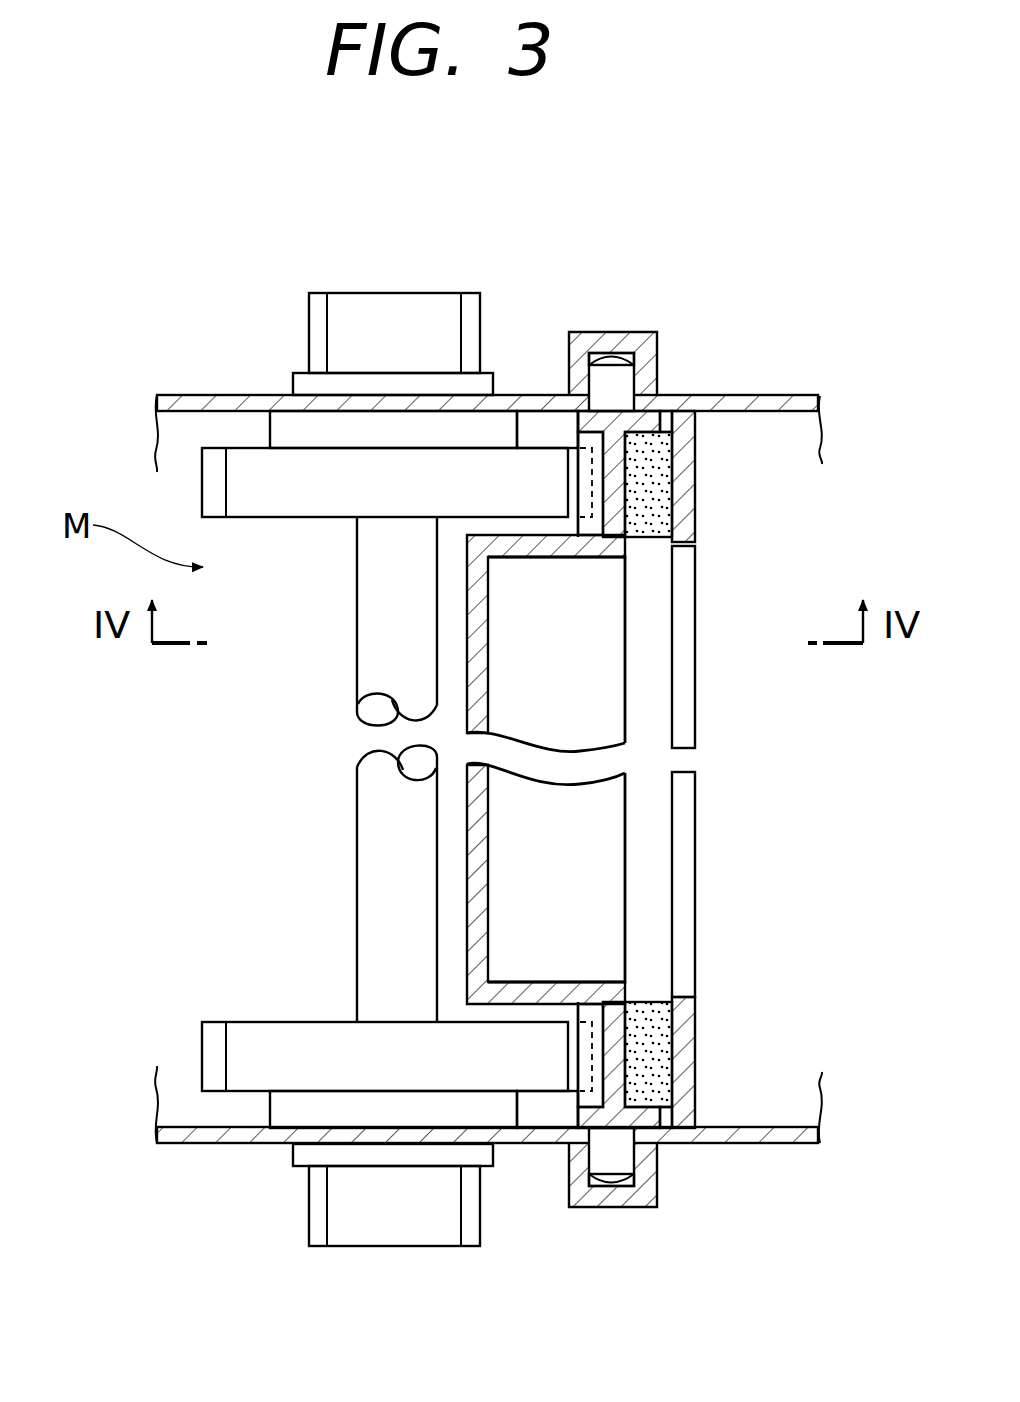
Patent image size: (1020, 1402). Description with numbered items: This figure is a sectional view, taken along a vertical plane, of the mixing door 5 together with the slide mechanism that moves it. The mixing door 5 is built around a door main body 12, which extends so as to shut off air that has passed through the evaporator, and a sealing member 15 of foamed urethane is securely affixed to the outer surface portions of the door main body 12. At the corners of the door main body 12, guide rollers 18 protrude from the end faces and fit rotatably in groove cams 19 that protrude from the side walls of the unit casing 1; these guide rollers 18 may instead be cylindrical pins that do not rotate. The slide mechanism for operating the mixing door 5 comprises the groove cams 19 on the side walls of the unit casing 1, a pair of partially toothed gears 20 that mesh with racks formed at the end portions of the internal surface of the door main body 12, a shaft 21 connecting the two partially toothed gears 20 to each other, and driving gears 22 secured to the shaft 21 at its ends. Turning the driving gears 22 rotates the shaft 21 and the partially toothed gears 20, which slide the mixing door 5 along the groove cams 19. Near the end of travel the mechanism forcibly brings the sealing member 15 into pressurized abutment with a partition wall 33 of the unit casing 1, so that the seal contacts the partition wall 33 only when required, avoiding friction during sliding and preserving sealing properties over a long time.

The unit casing 1 is at (778, 402).
The mixing door 5 is at (638, 632).
The door main body 12 is at (630, 712).
The sealing member 15 is at (660, 488).
The guide roller 18 is at (621, 378).
The groove cam 19 is at (600, 362).
The partially toothed gear 20 is at (293, 507).
The shaft 21 is at (378, 876).
The driving gear 22 is at (309, 317).
The partition wall 33 is at (696, 1058).